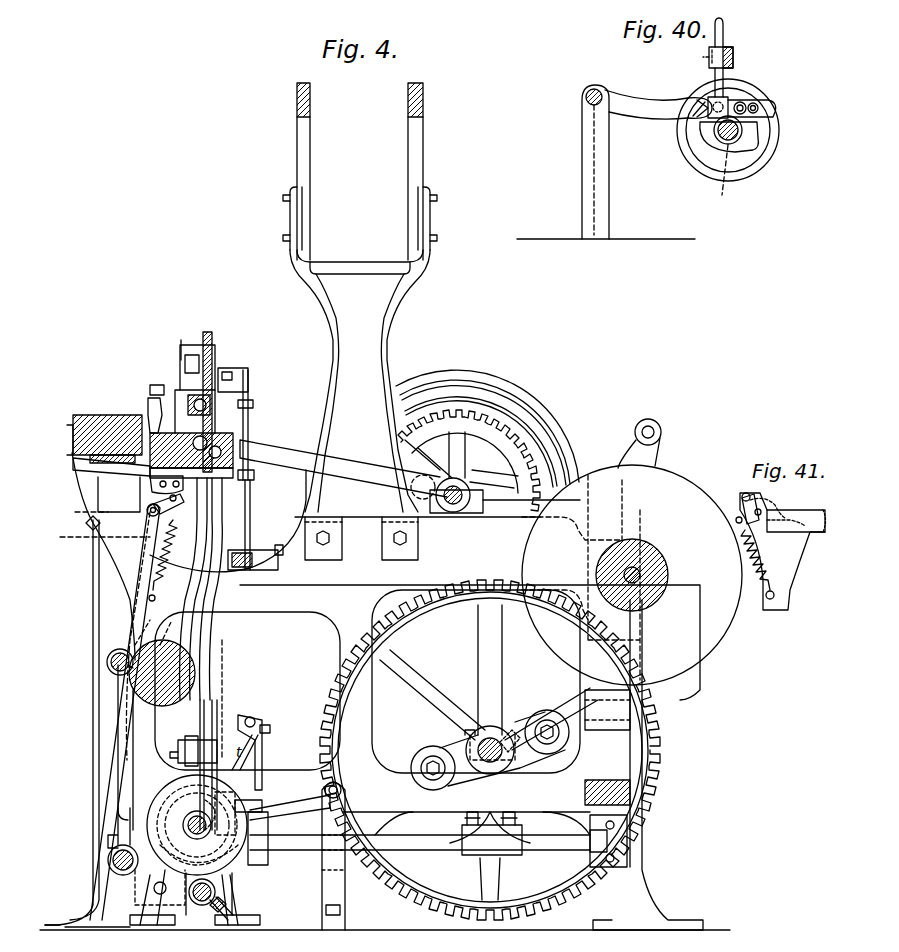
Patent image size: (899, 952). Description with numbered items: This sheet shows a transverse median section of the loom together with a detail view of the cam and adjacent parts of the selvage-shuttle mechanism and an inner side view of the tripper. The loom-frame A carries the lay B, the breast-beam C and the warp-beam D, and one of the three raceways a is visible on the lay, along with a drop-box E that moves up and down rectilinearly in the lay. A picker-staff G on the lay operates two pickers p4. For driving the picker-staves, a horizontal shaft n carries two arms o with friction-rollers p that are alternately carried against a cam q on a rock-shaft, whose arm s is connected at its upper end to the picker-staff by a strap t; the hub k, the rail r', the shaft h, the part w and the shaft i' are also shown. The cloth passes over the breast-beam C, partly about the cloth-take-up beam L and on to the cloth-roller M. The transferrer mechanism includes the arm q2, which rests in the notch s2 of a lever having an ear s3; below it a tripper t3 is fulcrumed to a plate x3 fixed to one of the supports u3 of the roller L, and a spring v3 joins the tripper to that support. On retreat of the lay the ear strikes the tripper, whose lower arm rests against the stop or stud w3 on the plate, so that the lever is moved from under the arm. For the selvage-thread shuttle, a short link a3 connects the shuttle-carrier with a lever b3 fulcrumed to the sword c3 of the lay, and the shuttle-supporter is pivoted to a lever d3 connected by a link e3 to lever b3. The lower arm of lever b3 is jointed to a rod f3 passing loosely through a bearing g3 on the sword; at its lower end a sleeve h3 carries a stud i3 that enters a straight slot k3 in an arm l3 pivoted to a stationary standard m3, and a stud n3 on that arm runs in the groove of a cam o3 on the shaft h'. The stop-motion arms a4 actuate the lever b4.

In FIG. 4, the loom-frame A is at (385, 691).
In FIG. 4, the lay B is at (191, 455).
In FIG. 4, the breast-beam C is at (104, 439).
In FIG. 4, the warp-beam D is at (632, 552).
In FIG. 4, the drop-box E is at (190, 389).
In FIG. 4, the picker-staff G is at (222, 735).
In FIG. 4, the cloth-take-up beam L is at (162, 663).
In FIG. 4, the cloth-roller M is at (108, 664).
In FIG. 4, the raceway of the lay a is at (195, 360).
In FIG. 4, the picker p4 is at (210, 395).
In FIG. 4, the arm q2 is at (157, 378).
In FIG. 4, the notch s2 is at (149, 403).
In FIG. 4, the link a3 is at (242, 375).
In FIG. 4, the lever d3 is at (255, 405).
In FIG. 4, the link e3 is at (245, 520).
In FIG. 4, the lever b3 is at (255, 537).
In FIG. 4, the sword of the lay c3 is at (201, 589).
In FIG. 4, the lever b4 is at (111, 477).
In FIG. 4, the arm a4 is at (119, 494).
In FIG. 4, the ear s3 is at (162, 488).
In FIG. 4, the plate x3 is at (105, 523).
In FIG. 41, the plate x3 is at (793, 524).
In FIG. 4, the support u3 is at (125, 712).
In FIG. 41, the support u3 is at (783, 551).
In FIG. 4, the tripper t3 is at (172, 506).
In FIG. 40, the tripper t3 is at (658, 104).
In FIG. 41, the tripper t3 is at (742, 503).
In FIG. 4, the spring v3 is at (166, 560).
In FIG. 41, the spring v3 is at (756, 560).
In FIG. 4, the strap or connection t is at (343, 468).
In FIG. 4, the gear hub k is at (488, 441).
In FIG. 4, the rod f3 is at (213, 751).
In FIG. 40, the rod f3 is at (727, 57).
In FIG. 4, the bearing g3 is at (193, 751).
In FIG. 40, the bearing g3 is at (727, 57).
In FIG. 4, the arm s is at (254, 752).
In FIG. 4, the stud or friction-roller n3 is at (178, 790).
In FIG. 40, the stud or friction-roller n3 is at (778, 117).
In FIG. 4, the shaft h is at (191, 825).
In FIG. 4, the cylindrical sleeve h3 is at (220, 816).
In FIG. 40, the cylindrical sleeve h3 is at (706, 100).
In FIG. 4, the cam o3 is at (199, 854).
In FIG. 40, the cam o3 is at (728, 130).
In FIG. 4, the slot k3 is at (240, 805).
In FIG. 40, the slot k3 is at (690, 110).
In FIG. 4, the arm l3 is at (289, 827).
In FIG. 4, the shaft i' is at (215, 896).
In FIG. 4, the key w is at (218, 914).
In FIG. 4, the arm o is at (507, 728).
In FIG. 4, the friction-roller p is at (494, 750).
In FIG. 4, the horizontal shaft n is at (498, 758).
In FIG. 4, the bar r' is at (420, 842).
In FIG. 4, the cam q is at (490, 833).
In FIG. 4, the stationary standard m3 is at (333, 856).
In FIG. 40, the stationary standard m3 is at (595, 162).
In FIG. 40, the stud or friction-roller i3 is at (721, 131).
In FIG. 40, the shaft h' is at (726, 176).
In FIG. 41, the stop or stud w3 is at (767, 512).